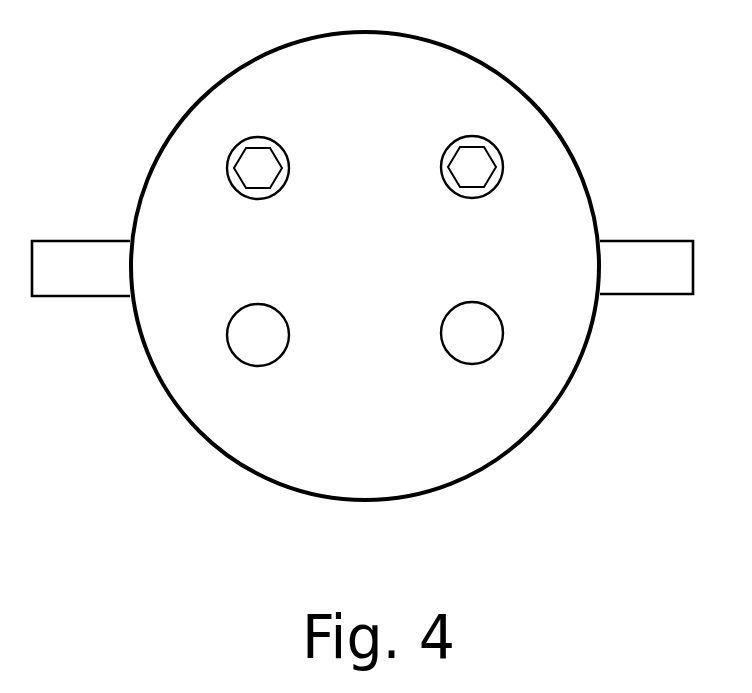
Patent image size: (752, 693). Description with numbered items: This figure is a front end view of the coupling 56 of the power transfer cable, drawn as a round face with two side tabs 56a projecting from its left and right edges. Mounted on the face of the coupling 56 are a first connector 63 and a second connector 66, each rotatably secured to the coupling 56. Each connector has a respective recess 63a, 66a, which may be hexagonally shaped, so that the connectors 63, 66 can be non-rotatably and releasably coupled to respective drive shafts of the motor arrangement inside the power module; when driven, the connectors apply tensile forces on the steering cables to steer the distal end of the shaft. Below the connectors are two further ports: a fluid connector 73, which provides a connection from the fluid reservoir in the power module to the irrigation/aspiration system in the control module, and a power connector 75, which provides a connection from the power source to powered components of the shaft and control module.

The coupling 56 is at (568, 125).
The tabs of plate 56a is at (655, 258).
The second connector 66 is at (258, 197).
The recess 66a is at (272, 162).
The first connector 63 is at (472, 195).
The recess 63a is at (458, 180).
The power connector 75 is at (258, 362).
The fluid connector 73 is at (472, 360).